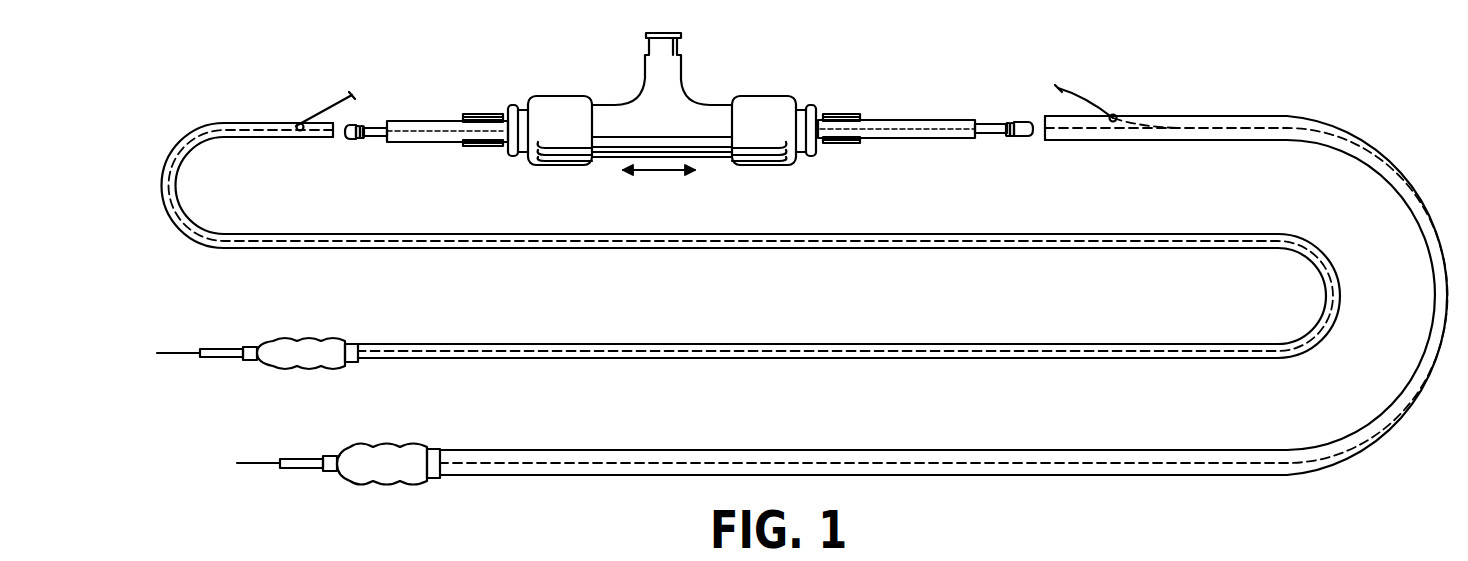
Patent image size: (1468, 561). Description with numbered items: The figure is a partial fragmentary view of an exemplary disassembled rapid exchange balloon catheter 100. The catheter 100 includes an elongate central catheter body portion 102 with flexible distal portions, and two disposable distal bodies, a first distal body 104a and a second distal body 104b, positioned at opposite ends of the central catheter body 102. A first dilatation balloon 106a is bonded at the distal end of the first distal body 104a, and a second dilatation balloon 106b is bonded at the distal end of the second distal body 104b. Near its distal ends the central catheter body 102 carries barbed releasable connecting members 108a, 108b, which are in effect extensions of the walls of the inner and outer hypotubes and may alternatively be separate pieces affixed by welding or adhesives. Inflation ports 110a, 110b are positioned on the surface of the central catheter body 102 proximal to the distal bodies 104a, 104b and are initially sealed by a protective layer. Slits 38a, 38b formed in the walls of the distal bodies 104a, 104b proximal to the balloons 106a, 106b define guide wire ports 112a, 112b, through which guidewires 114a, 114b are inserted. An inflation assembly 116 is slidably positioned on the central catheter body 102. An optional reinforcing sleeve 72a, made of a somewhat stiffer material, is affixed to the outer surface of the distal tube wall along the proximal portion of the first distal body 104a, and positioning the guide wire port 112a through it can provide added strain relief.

The rapid exchange balloon catheter 100 is at (783, 259).
The slit 38a is at (470, 249).
The slit 38b is at (1348, 128).
The reinforcing sleeve 72a is at (309, 138).
The central catheter body portion 102 is at (689, 109).
The first distal body 104a is at (334, 137).
The second distal body 104b is at (1063, 141).
The first dilatation balloon 106a is at (300, 338).
The second dilatation balloon 106b is at (375, 445).
The barbed releasable connecting member 108a is at (375, 123).
The barbed releasable connecting member 108b is at (980, 119).
The inflation port 110a is at (487, 121).
The inflation port 110b is at (842, 117).
The guide wire port 112a is at (298, 131).
The guide wire port 112b is at (1115, 122).
The guidewire 114a is at (337, 105).
The guidewire 114b is at (1090, 98).
The inflation assembly 116 is at (630, 91).